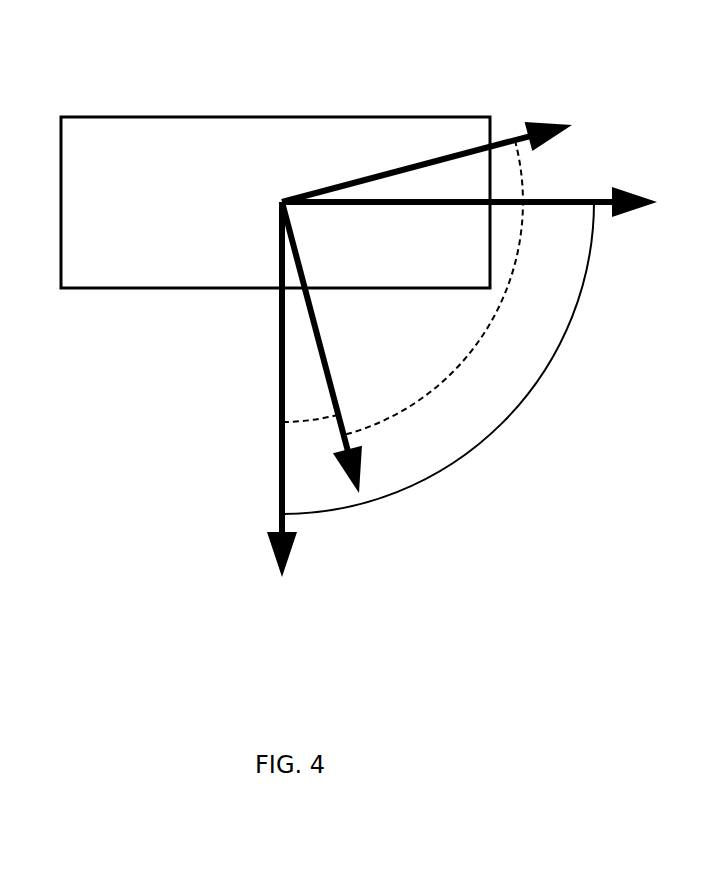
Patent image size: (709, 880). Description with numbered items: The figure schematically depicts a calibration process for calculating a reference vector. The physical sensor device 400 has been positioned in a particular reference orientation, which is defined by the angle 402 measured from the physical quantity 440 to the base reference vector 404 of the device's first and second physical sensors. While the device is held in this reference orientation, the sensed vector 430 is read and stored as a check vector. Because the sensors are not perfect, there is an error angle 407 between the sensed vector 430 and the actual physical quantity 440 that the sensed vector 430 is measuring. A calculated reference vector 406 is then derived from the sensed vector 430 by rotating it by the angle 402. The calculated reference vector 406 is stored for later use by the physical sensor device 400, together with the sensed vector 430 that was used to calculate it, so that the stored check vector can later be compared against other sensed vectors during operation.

The physical sensor device 400 is at (230, 116).
The angle 402 is at (470, 353).
The base reference vector 404 is at (643, 192).
The calculated reference vector 406 is at (548, 124).
The error angle 407 is at (297, 421).
The sensed vector 430 is at (360, 480).
The physical quantity 440 is at (270, 548).